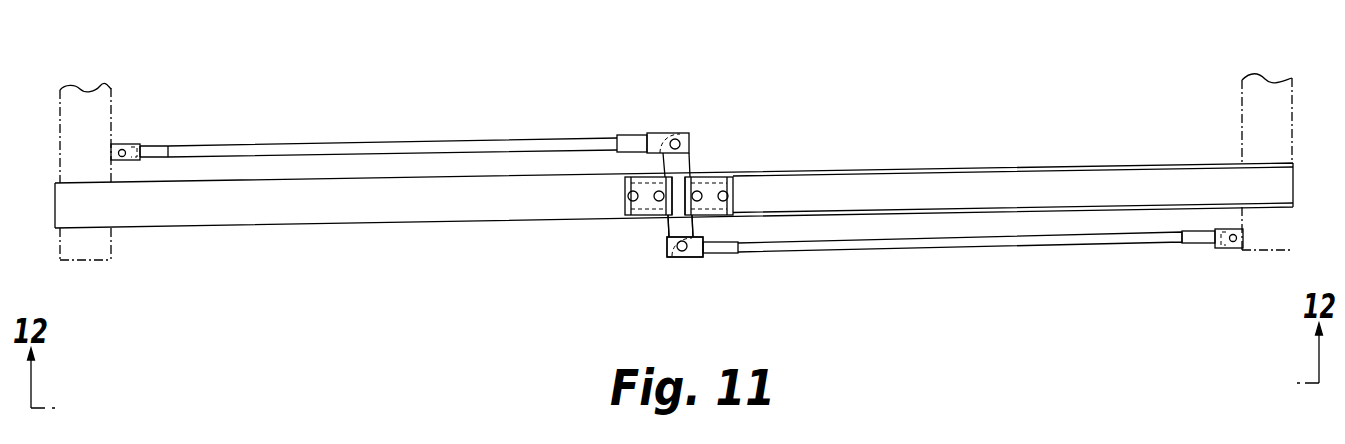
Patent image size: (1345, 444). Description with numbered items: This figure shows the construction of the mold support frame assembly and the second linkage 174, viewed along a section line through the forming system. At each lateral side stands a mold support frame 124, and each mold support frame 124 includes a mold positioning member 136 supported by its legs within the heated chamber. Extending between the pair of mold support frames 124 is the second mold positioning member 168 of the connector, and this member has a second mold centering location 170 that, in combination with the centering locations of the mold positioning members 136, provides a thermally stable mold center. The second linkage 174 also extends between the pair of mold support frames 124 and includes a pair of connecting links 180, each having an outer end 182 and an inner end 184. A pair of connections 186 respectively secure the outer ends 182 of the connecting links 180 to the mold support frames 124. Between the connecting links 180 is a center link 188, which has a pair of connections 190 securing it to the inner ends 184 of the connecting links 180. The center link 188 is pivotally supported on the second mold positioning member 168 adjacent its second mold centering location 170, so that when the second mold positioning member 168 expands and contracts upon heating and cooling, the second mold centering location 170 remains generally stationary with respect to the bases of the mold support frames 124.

The mold support frame 124 is at (113, 95).
The mold positioning member 136 is at (90, 119).
The second mold positioning member 168 is at (797, 172).
The second mold centering location 170 is at (680, 192).
The second linkage 174 is at (650, 268).
The connecting link 180 is at (540, 138).
The outer end 182 is at (146, 146).
The inner end 184 is at (630, 135).
The connection 186 is at (123, 161).
The center link 188 is at (665, 231).
The connection 190 is at (680, 133).